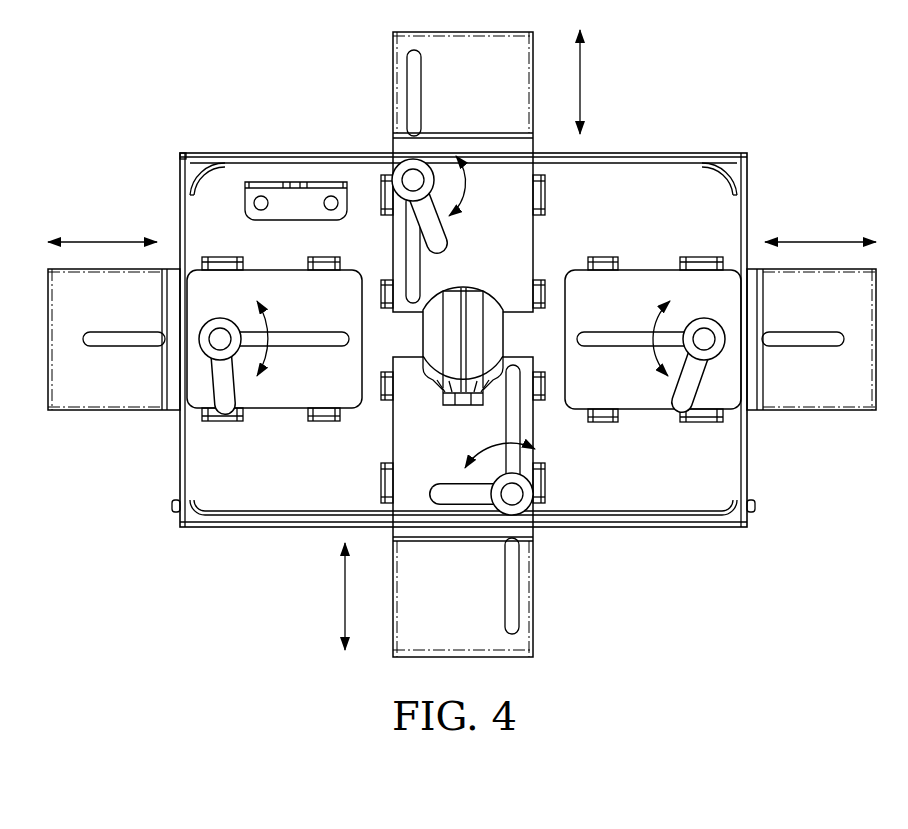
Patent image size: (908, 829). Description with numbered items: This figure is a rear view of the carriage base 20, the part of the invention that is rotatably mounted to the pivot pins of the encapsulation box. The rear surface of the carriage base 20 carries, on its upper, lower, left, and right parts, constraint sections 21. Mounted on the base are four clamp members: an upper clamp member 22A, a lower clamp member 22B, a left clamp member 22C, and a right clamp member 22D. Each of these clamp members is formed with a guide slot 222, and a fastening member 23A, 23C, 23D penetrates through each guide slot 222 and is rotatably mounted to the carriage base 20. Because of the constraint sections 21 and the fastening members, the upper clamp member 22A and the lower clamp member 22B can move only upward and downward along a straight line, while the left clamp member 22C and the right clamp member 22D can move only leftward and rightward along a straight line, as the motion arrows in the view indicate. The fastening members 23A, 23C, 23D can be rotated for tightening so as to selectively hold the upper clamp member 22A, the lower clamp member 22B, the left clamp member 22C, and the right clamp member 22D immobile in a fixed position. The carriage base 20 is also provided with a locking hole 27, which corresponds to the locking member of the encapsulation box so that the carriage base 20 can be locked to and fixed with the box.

The carriage base 20 is at (680, 152).
The constraint sections 21 is at (213, 262).
The upper clamp member 22A is at (393, 52).
The lower clamp member 22B is at (393, 437).
The left clamp member 22C is at (650, 268).
The right clamp member 22D is at (108, 412).
The guide slot 222 is at (414, 118).
The fastening member 23A is at (436, 233).
The fastening member 23C is at (704, 333).
The fastening member 23D is at (220, 333).
The locking hole 27 is at (297, 183).